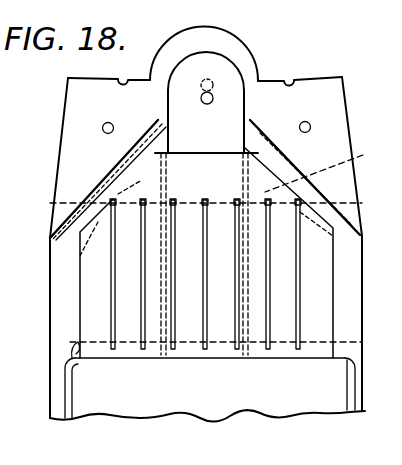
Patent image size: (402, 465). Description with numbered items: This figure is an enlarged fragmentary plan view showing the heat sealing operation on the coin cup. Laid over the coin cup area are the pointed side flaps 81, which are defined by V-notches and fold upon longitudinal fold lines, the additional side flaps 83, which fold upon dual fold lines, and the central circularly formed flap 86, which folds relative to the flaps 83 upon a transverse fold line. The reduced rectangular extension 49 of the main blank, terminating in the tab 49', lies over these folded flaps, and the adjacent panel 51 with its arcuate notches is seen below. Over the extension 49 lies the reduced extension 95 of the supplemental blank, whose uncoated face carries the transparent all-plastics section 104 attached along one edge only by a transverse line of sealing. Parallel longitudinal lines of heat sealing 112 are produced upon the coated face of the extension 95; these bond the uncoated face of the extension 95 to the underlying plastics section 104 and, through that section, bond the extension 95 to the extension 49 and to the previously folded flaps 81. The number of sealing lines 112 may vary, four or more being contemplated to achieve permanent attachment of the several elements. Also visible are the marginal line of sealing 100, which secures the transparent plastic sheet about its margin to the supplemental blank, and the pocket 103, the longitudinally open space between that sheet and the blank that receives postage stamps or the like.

The tab 49' is at (192, 85).
The central circularly formed flap 86 is at (256, 58).
The additional side flaps 83 is at (70, 112).
The pointed side flaps 81 is at (52, 204).
The transparent all-plastics section 104 is at (82, 257).
The reduced extension 95 is at (206, 253).
The parallel longitudinal lines of heat sealing 112 is at (140, 294).
The reduced rectangular extension 49 is at (191, 269).
The panel 51 is at (50, 408).
The marginal line of sealing 100 is at (68, 419).
The pocket 103 is at (188, 404).